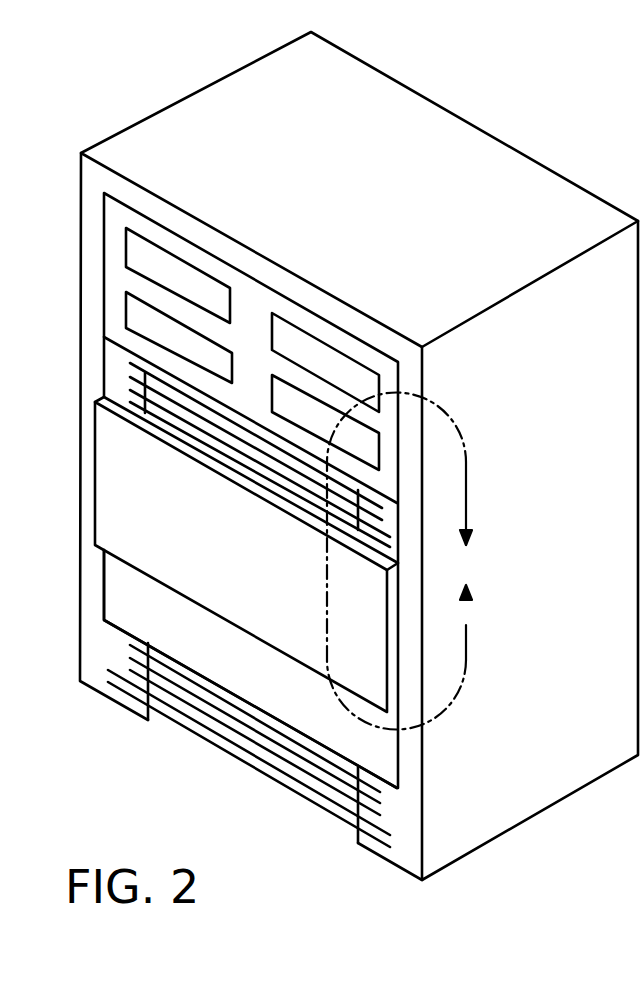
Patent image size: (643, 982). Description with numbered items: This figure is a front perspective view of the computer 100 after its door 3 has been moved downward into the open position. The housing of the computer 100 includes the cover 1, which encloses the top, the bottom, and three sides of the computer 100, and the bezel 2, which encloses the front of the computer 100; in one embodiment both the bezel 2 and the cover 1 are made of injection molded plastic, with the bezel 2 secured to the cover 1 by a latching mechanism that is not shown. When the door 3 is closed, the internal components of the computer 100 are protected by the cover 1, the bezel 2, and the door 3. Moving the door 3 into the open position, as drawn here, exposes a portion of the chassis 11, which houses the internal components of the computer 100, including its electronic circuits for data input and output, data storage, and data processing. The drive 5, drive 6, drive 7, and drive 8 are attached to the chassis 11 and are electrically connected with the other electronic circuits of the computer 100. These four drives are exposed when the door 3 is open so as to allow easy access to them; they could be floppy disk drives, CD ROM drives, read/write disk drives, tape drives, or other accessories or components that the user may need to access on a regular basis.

The cover 1 is at (560, 192).
The bezel 2 is at (122, 596).
The door 3 is at (125, 488).
The drive 5 is at (135, 247).
The drive 6 is at (140, 316).
The drive 7 is at (365, 382).
The drive 8 is at (365, 440).
The chassis 11 is at (257, 307).
The computer 100 is at (62, 402).